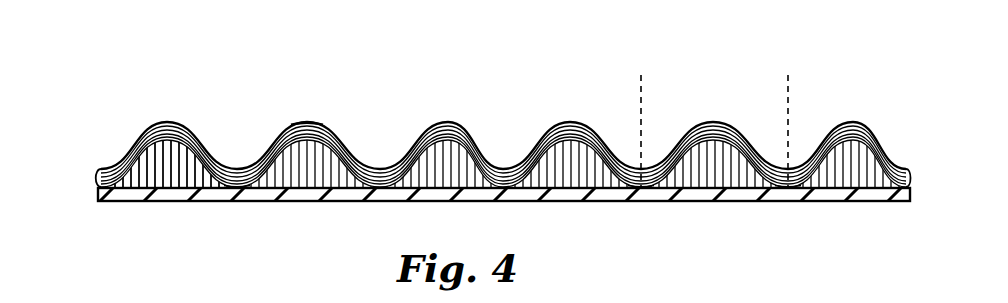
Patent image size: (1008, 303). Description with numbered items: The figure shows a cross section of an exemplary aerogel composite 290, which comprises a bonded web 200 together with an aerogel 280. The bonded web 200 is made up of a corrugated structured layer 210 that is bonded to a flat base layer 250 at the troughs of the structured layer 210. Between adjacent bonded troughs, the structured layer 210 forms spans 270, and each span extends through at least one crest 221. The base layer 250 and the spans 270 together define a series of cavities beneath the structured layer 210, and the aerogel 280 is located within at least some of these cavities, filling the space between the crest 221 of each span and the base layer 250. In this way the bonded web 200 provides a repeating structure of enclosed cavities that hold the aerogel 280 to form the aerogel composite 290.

The bonded web 200 is at (97, 163).
The structured layer 210 is at (152, 125).
The crest 221 is at (308, 123).
The base layer 250 is at (99, 193).
The spans 270 is at (781, 95).
The aerogel 280 is at (443, 160).
The aerogel composite 290 is at (506, 79).